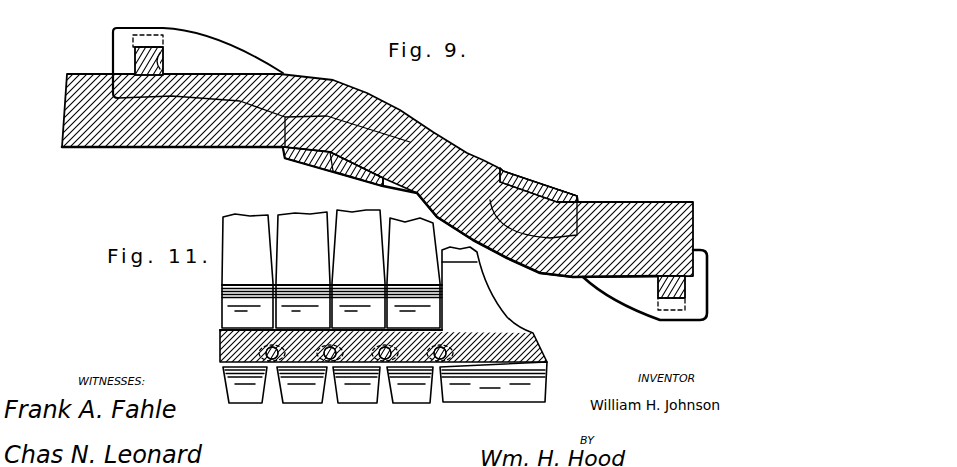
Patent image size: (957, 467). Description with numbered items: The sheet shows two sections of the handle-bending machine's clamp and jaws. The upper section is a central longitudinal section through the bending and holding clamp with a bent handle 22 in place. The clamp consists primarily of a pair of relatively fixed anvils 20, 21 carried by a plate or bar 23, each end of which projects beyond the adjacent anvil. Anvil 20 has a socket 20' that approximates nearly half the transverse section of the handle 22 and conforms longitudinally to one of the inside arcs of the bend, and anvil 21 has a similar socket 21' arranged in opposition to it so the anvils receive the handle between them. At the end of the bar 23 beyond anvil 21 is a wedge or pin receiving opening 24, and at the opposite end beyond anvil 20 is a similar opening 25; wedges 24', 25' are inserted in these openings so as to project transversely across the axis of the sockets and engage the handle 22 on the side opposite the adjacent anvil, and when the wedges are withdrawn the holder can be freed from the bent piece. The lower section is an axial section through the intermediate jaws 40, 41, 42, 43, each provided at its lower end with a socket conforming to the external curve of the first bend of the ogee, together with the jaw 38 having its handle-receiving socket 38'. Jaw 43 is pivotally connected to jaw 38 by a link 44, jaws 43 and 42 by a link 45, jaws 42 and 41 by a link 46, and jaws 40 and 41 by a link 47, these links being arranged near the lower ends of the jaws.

In FIG. 9, the anvil 20 is at (319, 169).
In FIG. 9, the socket 20' is at (349, 172).
In FIG. 9, the anvil 21 is at (538, 172).
In FIG. 9, the socket 21' is at (573, 179).
In FIG. 9, the handle 22 is at (178, 123).
In FIG. 9, the plate or bar 23 is at (247, 67).
In FIG. 9, the wedge or pin receiving opening 24 is at (663, 312).
In FIG. 9, the wedge 24' is at (661, 285).
In FIG. 9, the wedge or pin receiving opening 25 is at (122, 63).
In FIG. 9, the wedge 25' is at (148, 25).
In FIG. 11, the jaw 38 is at (383, 304).
In FIG. 11, the handle-receiving socket 38' is at (493, 398).
In FIG. 11, the intermediate jaw 40 is at (247, 271).
In FIG. 11, the intermediate jaw 41 is at (303, 270).
In FIG. 11, the intermediate jaw 42 is at (358, 269).
In FIG. 11, the intermediate jaw 43 is at (413, 273).
In FIG. 11, the link 44 is at (440, 362).
In FIG. 11, the link 45 is at (385, 362).
In FIG. 11, the link 46 is at (329, 362).
In FIG. 11, the link 47 is at (272, 362).